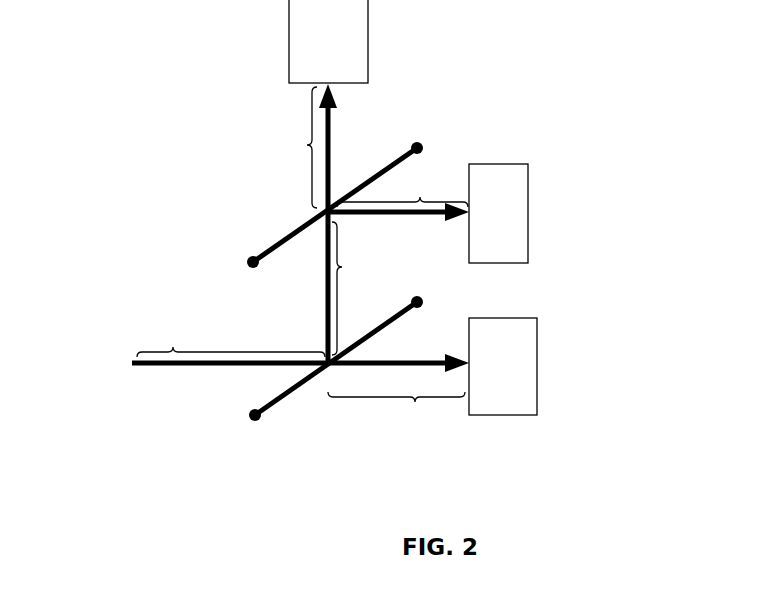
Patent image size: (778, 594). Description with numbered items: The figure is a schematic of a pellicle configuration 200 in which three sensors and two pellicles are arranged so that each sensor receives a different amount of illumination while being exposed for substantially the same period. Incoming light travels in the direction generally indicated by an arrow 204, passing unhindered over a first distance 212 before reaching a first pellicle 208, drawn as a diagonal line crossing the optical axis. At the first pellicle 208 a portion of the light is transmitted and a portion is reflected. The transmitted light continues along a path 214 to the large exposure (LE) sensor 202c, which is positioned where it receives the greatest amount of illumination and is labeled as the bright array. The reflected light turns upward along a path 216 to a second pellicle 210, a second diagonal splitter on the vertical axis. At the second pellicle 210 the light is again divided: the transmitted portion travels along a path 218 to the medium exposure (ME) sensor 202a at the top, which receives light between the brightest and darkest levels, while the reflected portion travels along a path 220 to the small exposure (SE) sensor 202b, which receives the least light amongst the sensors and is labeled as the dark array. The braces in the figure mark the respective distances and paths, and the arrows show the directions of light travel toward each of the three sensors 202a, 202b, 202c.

The pellicle configuration 200 is at (122, 49).
The medium exposure (ME) sensor 202a is at (368, 35).
The small exposure (SE) sensor 202b is at (528, 212).
The large exposure (LE) sensor 202c is at (537, 366).
The arrow 204 is at (207, 364).
The first pellicle 208 is at (250, 418).
The second pellicle 210 is at (292, 236).
The first distance 212 is at (231, 338).
The path 214 is at (396, 411).
The path 216 is at (348, 288).
The path 218 is at (300, 147).
The path 220 is at (402, 192).